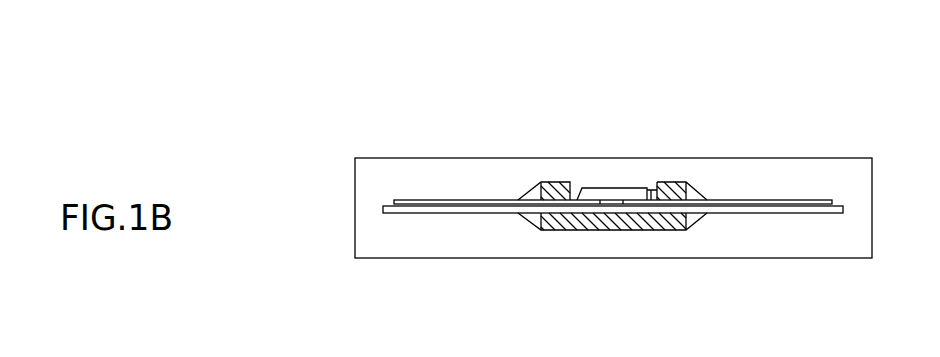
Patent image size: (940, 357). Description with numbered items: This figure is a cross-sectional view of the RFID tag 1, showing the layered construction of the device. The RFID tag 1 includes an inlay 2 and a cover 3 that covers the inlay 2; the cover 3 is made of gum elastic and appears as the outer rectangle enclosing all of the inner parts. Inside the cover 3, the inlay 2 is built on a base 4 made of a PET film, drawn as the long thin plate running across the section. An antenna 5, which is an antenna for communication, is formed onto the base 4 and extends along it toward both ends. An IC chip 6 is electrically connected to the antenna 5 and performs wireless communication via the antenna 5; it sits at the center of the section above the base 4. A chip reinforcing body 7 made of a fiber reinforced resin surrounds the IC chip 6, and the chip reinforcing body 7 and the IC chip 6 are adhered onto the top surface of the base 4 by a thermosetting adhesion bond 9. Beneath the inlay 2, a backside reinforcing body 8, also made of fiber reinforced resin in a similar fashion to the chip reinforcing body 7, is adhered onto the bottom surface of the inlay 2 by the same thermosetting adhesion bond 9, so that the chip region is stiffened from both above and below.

The RFID tag 1 is at (430, 103).
The inlay 2 is at (723, 178).
The cover 3 is at (813, 168).
The base 4 is at (780, 213).
The antenna 5 is at (428, 200).
The IC chip 6 is at (612, 190).
The chip reinforcing body 7 is at (554, 190).
The backside reinforcing body 8 is at (667, 230).
The thermosetting adhesion bond 9 is at (693, 190).